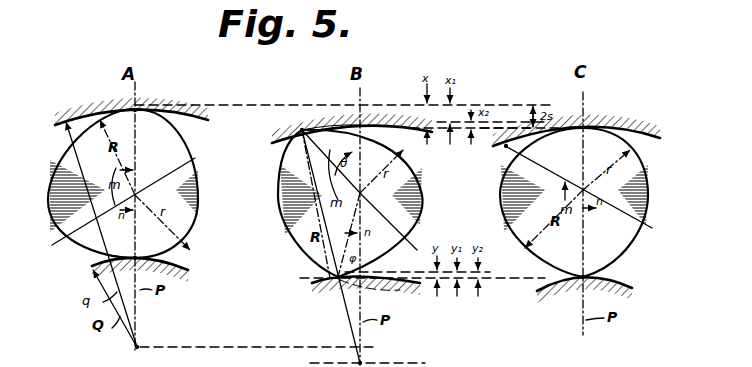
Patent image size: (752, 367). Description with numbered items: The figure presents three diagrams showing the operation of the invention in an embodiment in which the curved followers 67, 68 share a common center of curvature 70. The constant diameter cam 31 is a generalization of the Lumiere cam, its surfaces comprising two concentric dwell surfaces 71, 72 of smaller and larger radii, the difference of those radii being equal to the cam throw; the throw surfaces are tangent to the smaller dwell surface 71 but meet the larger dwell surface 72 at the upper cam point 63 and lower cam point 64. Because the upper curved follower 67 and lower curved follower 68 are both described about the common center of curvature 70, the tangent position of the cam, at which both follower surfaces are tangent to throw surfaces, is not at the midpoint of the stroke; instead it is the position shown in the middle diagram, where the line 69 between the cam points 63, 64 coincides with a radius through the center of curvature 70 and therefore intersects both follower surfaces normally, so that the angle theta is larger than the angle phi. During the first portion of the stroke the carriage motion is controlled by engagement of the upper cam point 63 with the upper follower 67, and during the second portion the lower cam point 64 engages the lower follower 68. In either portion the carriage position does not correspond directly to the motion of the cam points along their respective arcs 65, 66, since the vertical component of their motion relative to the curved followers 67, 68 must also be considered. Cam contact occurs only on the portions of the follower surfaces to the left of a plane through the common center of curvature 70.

The constant diameter cam 31 is at (199, 188).
The upper cam point 63 is at (137, 110).
The lower cam point 64 is at (64, 247).
The arc of upper cam point 65 is at (326, 124).
The arc of lower cam point 66 is at (366, 287).
The upper curved follower 67 is at (190, 118).
The lower curved follower 68 is at (178, 266).
The line between cam points 69 is at (312, 150).
The common center of curvature 70 is at (139, 348).
The dwell surface of smaller radius 71 is at (198, 212).
The dwell surface of larger radius 72 is at (54, 170).